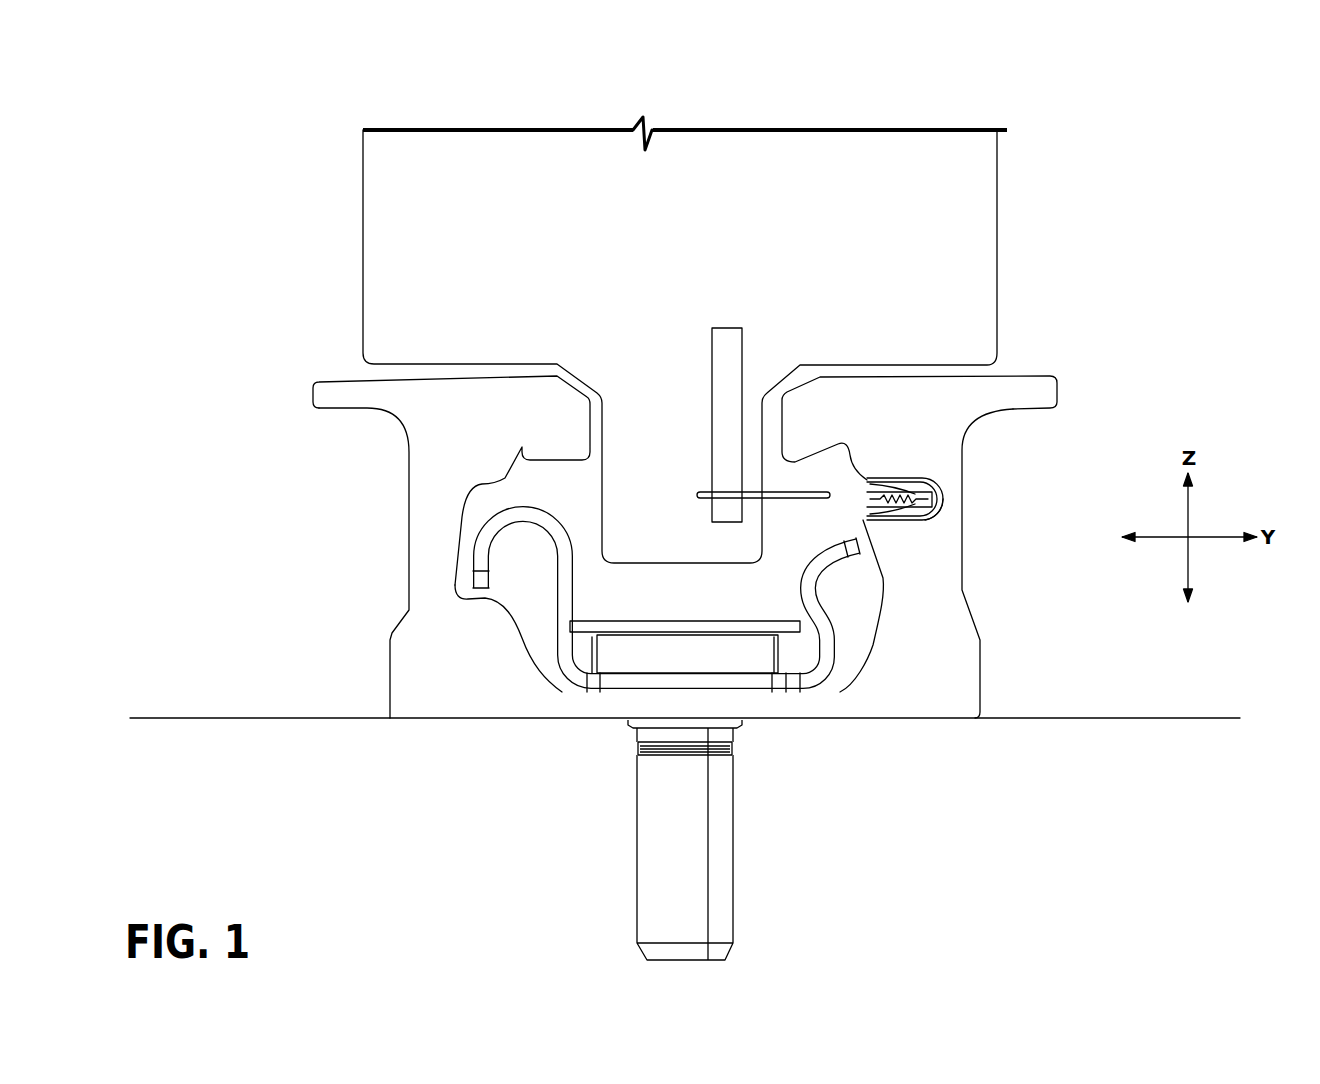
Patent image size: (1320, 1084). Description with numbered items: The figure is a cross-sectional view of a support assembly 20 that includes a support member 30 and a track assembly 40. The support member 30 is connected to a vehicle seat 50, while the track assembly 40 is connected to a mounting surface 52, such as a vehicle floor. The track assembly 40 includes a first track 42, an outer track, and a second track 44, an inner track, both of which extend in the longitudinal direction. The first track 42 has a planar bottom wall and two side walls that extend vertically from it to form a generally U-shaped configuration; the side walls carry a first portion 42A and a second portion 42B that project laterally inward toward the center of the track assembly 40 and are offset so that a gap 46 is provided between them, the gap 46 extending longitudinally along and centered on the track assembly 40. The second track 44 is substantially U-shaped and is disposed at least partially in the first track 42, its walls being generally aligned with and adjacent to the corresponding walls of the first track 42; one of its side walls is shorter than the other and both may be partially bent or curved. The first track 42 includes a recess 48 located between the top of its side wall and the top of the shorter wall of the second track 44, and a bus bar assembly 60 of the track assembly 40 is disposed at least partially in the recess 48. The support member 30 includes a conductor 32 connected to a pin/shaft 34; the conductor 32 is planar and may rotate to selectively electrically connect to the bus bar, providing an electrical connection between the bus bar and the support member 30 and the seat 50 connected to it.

The support assembly 20 is at (1078, 118).
The support member 30 is at (1060, 233).
The conductor 32 is at (783, 492).
The pin/shaft 34 is at (740, 353).
The track assembly 40 is at (1092, 397).
The first track 42 is at (945, 693).
The first portion 42A is at (820, 423).
The second portion 42B is at (560, 428).
The second track 44 is at (842, 672).
The gap 46 is at (658, 410).
The recess 48 is at (945, 495).
The vehicle seat 50 is at (467, 128).
The mounting surface 52 is at (1143, 718).
The bus bar assembly 60 is at (937, 527).